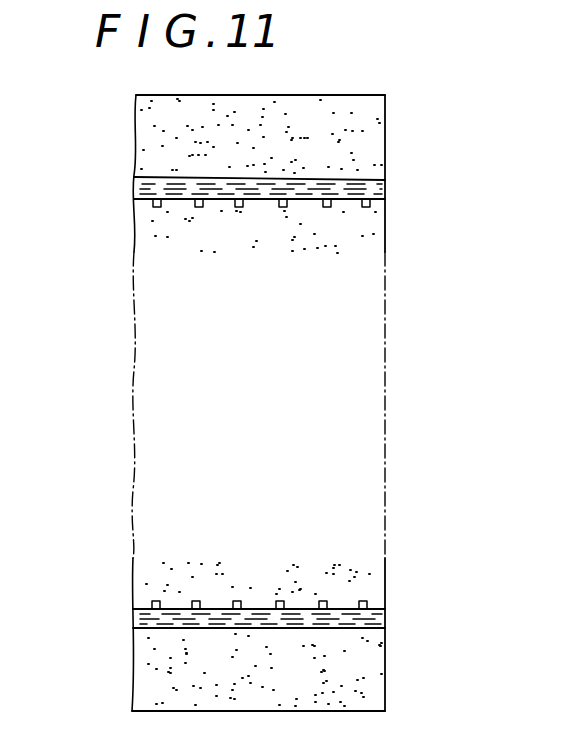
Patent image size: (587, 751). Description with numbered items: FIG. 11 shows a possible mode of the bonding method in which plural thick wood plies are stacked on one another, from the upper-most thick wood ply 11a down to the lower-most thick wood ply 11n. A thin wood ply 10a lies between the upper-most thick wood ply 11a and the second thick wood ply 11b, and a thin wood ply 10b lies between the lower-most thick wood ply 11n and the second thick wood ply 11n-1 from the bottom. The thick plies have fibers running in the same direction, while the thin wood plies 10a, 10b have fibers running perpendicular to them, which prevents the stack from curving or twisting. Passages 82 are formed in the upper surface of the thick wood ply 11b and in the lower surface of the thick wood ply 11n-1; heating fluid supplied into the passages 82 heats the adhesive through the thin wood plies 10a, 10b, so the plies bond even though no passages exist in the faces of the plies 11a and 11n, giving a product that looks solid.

The upper-most thick wood ply 11a is at (358, 133).
The thin wood ply 10a is at (385, 190).
The second thick wood ply 11b is at (370, 223).
The passages 82 is at (153, 207).
The second thick wood ply from the bottom 11n-1 is at (360, 583).
The thin wood ply 10b is at (373, 618).
The lower-most thick wood ply 11n is at (368, 681).